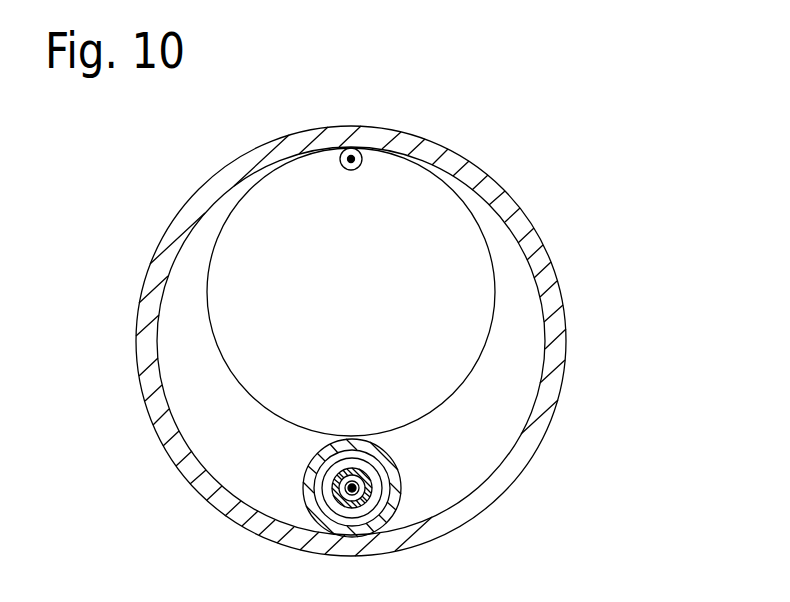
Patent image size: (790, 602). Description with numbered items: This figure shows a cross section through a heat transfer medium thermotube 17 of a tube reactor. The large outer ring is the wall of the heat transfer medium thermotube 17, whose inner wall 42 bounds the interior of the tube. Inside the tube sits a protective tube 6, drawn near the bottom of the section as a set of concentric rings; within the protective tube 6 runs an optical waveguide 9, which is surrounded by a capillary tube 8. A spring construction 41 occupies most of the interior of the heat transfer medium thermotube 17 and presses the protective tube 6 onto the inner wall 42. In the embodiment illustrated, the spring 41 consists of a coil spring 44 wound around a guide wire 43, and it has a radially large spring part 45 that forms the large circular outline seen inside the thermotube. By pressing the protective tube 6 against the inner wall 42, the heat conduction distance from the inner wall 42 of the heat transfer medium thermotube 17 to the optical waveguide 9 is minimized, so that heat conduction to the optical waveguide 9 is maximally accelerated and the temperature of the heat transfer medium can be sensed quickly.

The heat transfer medium thermotube 17 is at (513, 203).
The inner wall 42 is at (524, 450).
The spring construction 41 is at (351, 292).
The radially large spring part 45 is at (212, 329).
The guide wire 43 is at (339, 160).
The coil spring 44 is at (407, 153).
The protective tube 6 is at (313, 483).
The capillary tube 8 is at (372, 488).
The optical waveguide 9 is at (338, 478).